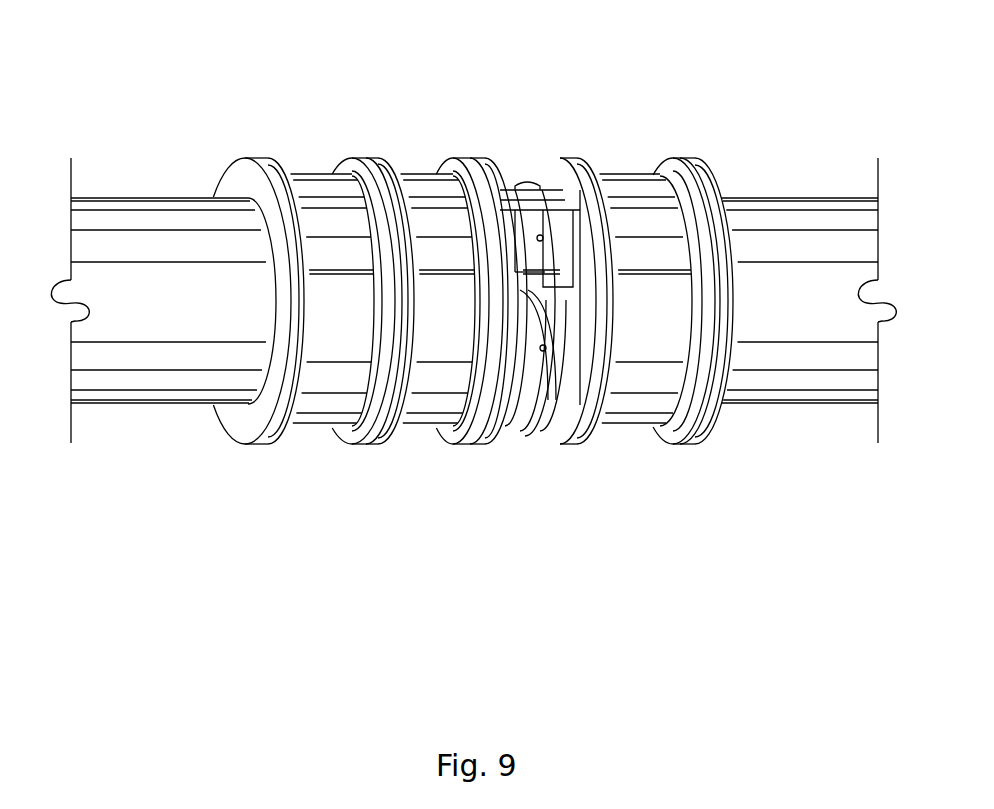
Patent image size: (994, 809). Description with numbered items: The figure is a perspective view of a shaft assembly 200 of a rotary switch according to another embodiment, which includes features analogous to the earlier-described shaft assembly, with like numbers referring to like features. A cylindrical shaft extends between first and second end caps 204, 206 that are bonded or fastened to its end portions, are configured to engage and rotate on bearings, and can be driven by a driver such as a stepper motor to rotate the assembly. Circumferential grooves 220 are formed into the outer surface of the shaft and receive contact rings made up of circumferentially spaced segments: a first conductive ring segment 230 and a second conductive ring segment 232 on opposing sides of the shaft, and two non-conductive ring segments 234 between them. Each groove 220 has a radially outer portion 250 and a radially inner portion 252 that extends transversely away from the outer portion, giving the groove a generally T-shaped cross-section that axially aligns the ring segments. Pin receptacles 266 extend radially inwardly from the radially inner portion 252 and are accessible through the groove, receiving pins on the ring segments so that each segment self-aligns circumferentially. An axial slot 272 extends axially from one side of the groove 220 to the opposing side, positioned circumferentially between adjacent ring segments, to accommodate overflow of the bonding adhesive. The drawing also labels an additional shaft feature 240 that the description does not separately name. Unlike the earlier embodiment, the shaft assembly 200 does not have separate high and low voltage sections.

The shaft assembly 200 is at (584, 50).
The first end cap 204 is at (112, 203).
The second end cap 206 is at (820, 205).
The groove 220 is at (504, 172).
The first conductive ring segment 230 is at (289, 170).
The second conductive ring segment 232 is at (293, 433).
The non-conductive ring segment 234 is at (325, 210).
The center flange 240 is at (468, 148).
The radially outer portion of groove 250 is at (512, 380).
The radially inner portion of groove 252 is at (530, 393).
The pin receptacle 266 is at (533, 212).
The axial slot 272 is at (558, 189).